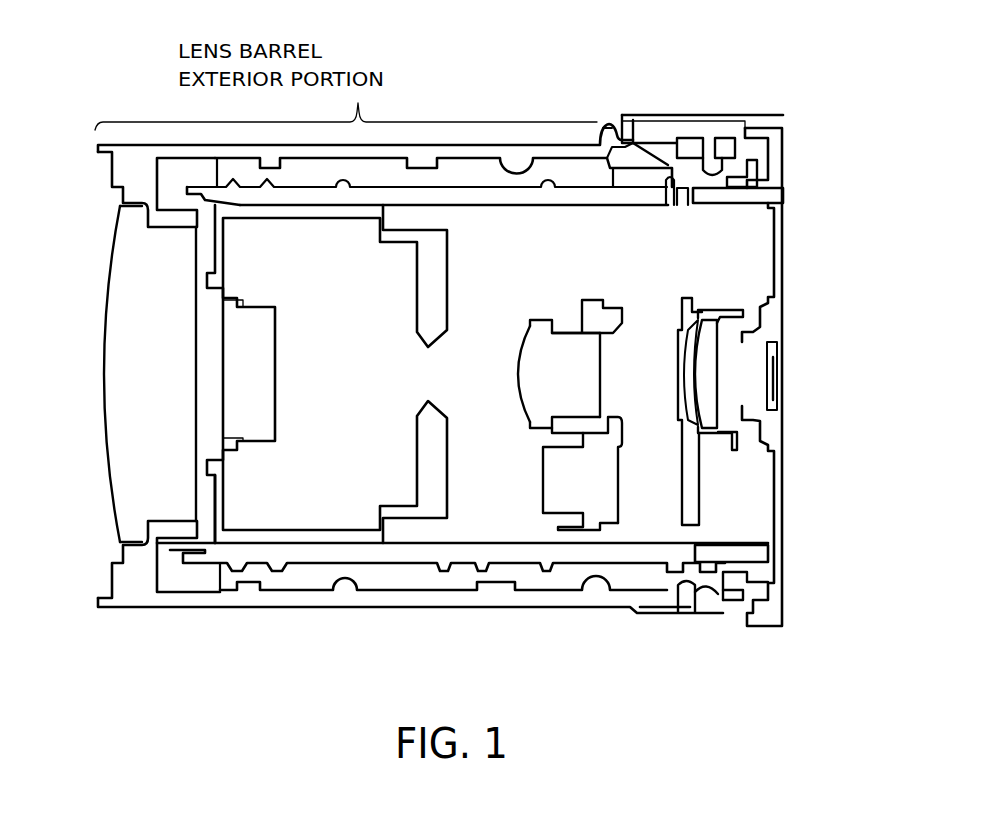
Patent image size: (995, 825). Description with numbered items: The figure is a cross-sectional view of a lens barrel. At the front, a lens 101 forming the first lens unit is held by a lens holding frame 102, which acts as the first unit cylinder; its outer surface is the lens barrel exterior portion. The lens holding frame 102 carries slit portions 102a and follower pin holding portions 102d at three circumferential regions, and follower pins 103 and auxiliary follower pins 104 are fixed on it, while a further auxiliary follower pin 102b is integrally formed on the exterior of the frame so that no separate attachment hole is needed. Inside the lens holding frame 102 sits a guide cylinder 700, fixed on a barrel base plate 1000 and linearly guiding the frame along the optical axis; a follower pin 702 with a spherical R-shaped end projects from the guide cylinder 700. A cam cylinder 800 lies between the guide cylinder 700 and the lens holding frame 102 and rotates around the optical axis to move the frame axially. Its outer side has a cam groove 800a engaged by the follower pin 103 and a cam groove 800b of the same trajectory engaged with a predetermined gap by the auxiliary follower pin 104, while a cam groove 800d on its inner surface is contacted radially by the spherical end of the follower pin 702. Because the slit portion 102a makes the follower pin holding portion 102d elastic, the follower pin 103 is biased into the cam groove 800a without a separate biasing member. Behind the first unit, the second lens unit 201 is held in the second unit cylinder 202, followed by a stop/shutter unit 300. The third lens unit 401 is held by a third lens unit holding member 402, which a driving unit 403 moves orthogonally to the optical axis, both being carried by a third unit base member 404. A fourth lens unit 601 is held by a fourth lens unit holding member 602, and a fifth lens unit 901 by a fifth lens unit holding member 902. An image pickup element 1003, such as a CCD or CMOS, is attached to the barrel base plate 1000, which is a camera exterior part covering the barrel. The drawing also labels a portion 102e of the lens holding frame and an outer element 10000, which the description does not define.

The lens 101 is at (142, 262).
The lens holding frame 102 is at (136, 168).
The slit portion 102a is at (673, 138).
The auxiliary follower pin 102b is at (613, 137).
The follower pin holding portion 102d is at (690, 143).
The lower portion of barrel 102e is at (652, 608).
The follower pin 103 is at (710, 147).
The auxiliary follower pin 104 is at (686, 607).
The second lens unit 201 is at (230, 368).
The second unit cylinder 202 is at (217, 507).
The stop/shutter unit 300 is at (432, 303).
The third lens unit 401 is at (533, 370).
The third lens unit holding member 402 is at (563, 323).
The driving unit 403 is at (557, 490).
The third unit base member 404 is at (607, 490).
The fourth lens unit 601 is at (684, 377).
The fourth lens unit holding member 602 is at (690, 465).
The guide cylinder 700 is at (484, 196).
The follower pin 702 is at (673, 204).
The cam cylinder 800 is at (396, 165).
The cam groove 800a is at (734, 178).
The cam groove 800b is at (723, 601).
The cam groove 800d is at (660, 140).
The fifth lens unit 901 is at (707, 360).
The fifth lens unit holding member 902 is at (720, 312).
The barrel base plate 1000 is at (784, 218).
The image pickup element 1003 is at (778, 402).
The camera body plate 10000 is at (757, 121).